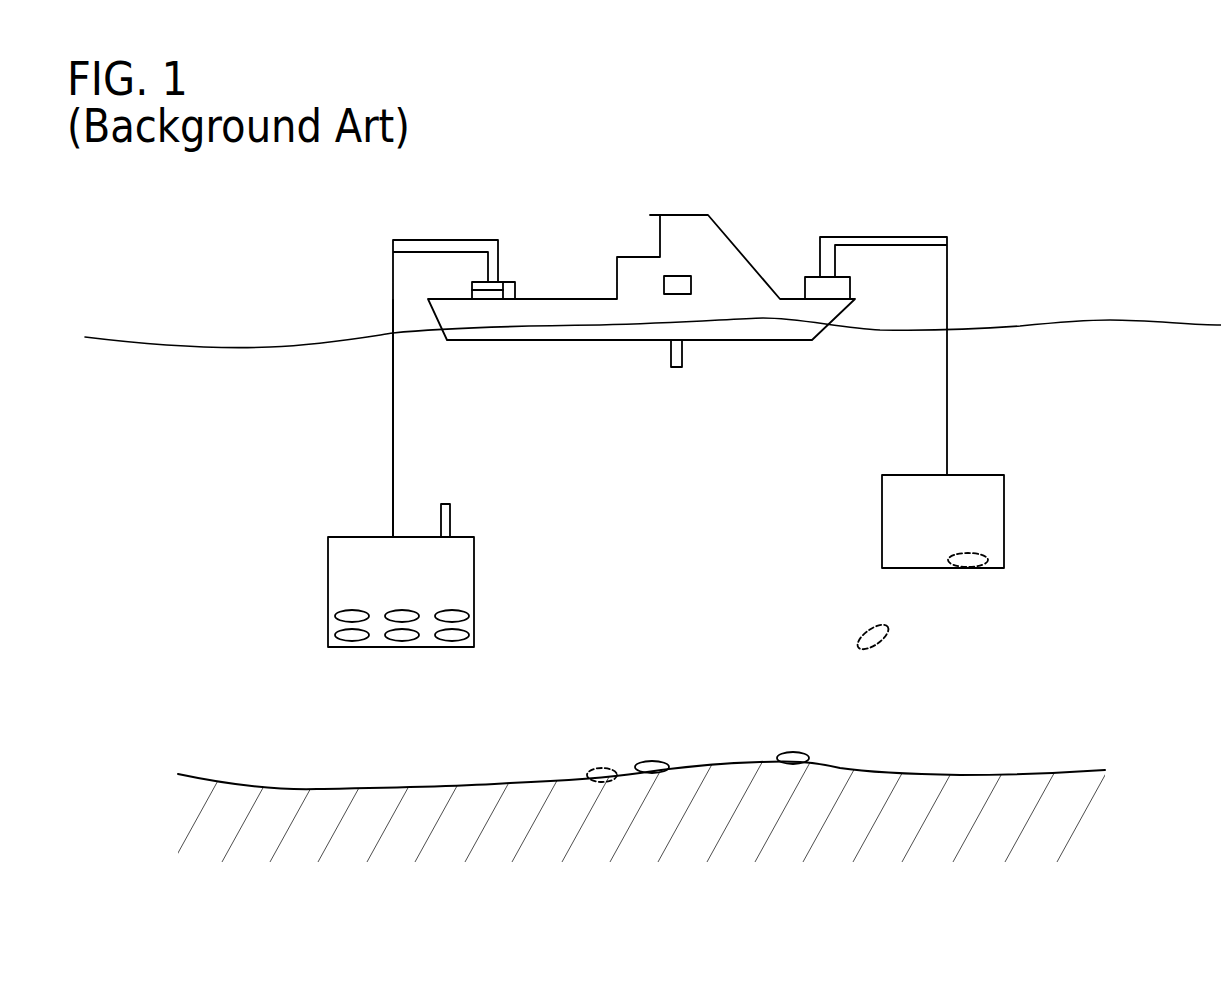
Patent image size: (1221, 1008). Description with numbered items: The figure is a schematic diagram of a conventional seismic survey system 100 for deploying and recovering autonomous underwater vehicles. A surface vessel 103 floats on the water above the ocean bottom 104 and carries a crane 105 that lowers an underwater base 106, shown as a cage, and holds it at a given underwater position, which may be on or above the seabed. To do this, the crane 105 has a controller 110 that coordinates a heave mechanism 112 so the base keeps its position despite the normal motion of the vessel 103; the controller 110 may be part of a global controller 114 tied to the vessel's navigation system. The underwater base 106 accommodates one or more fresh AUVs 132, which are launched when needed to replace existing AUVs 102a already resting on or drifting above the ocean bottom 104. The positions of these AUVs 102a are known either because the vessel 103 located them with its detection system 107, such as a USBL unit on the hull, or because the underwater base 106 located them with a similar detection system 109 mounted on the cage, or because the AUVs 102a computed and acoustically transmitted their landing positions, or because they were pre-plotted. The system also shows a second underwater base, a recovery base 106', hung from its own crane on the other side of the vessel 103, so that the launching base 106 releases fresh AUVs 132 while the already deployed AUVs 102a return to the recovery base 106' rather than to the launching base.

The seismic survey system 100 is at (627, 167).
The vessel 103 is at (725, 232).
The ocean bottom 104 is at (990, 775).
The crane 105 is at (433, 240).
The underwater base 106 is at (432, 590).
The recovery base 106' is at (986, 521).
The detection system 107 is at (682, 355).
The detection system 109 is at (450, 513).
The controller 110 is at (510, 290).
The heave mechanism 112 is at (488, 295).
The global controller 114 is at (682, 276).
The AUVs 132 is at (450, 641).
The AUVs 102a is at (987, 560).